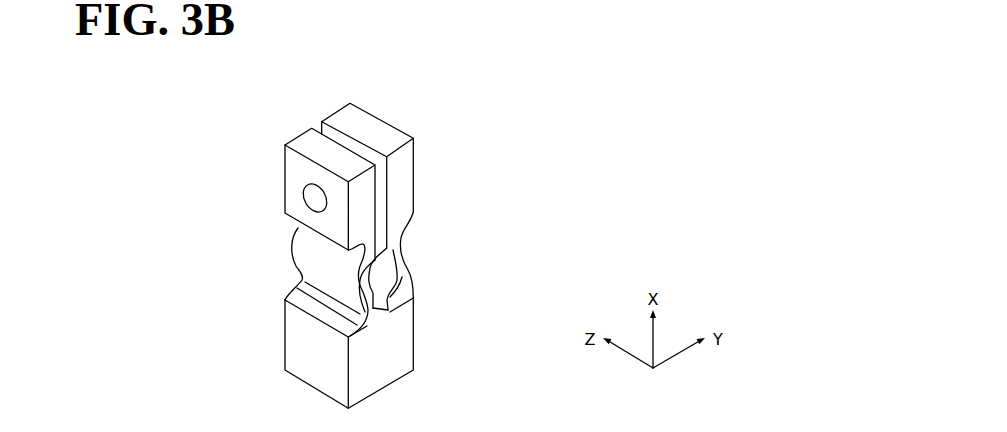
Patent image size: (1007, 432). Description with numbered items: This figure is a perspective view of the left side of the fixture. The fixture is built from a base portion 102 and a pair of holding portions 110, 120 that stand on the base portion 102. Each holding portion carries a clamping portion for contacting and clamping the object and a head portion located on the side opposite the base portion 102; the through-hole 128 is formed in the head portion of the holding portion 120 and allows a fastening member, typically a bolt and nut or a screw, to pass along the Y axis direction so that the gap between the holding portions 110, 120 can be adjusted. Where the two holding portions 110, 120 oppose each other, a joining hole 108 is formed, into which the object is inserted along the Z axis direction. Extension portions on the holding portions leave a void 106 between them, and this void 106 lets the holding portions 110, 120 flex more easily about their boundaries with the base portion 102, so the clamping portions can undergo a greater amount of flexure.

The base portion 102 is at (388, 366).
The void 106 is at (386, 302).
The joining hole 108 is at (386, 270).
The holding portion 110 is at (409, 111).
The holding portion 120 is at (284, 124).
The through-hole 128 is at (303, 200).